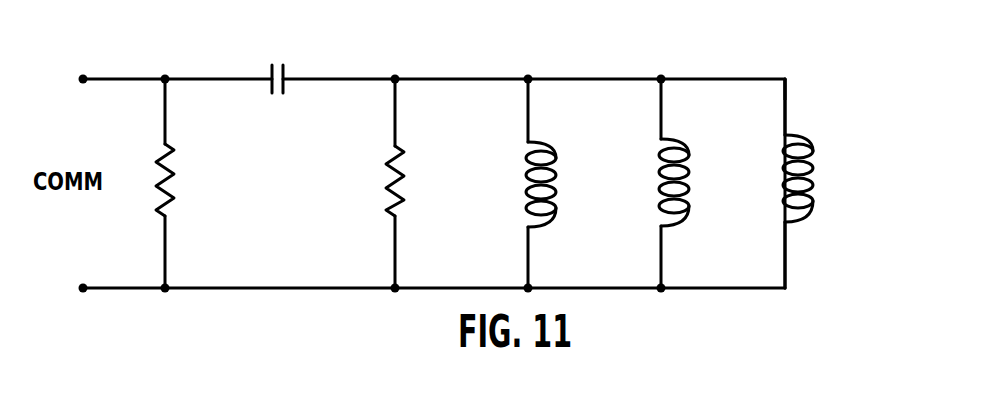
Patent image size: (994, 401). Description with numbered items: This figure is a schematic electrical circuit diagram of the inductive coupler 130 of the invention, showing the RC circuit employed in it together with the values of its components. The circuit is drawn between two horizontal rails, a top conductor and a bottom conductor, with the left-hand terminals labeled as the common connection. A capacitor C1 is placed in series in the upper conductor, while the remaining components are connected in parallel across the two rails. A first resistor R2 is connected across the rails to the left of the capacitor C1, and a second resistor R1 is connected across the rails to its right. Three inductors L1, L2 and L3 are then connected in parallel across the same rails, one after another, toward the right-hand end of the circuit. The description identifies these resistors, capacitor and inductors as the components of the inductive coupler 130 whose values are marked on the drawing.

The inductive coupler 130 is at (766, 64).
The capacitor C1 is at (276, 50).
The resistor R1 is at (423, 183).
The resistor R2 is at (197, 183).
The inductor L1 is at (556, 183).
The inductor L2 is at (692, 183).
The inductor L3 is at (819, 183).